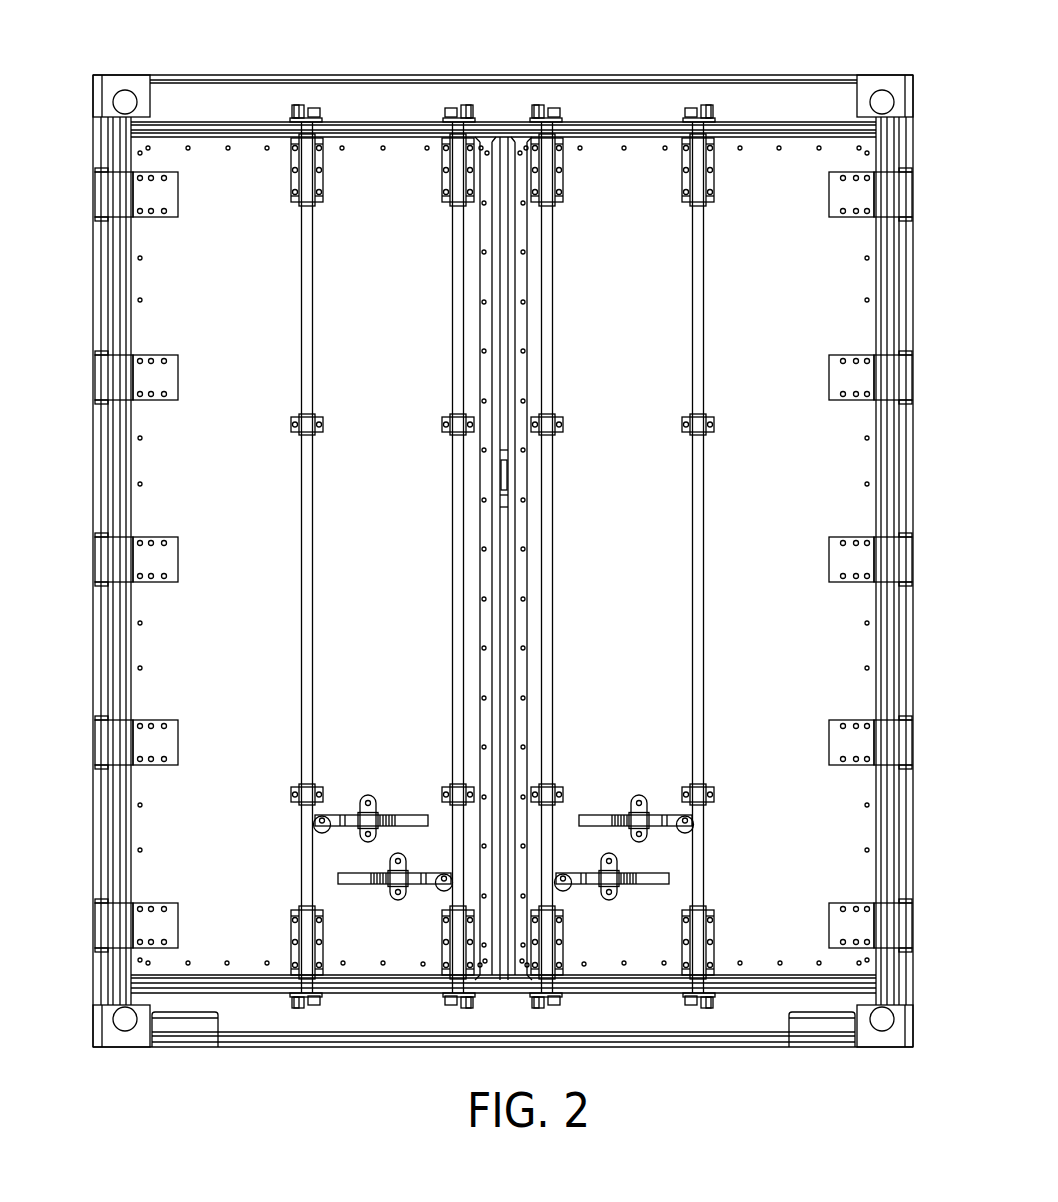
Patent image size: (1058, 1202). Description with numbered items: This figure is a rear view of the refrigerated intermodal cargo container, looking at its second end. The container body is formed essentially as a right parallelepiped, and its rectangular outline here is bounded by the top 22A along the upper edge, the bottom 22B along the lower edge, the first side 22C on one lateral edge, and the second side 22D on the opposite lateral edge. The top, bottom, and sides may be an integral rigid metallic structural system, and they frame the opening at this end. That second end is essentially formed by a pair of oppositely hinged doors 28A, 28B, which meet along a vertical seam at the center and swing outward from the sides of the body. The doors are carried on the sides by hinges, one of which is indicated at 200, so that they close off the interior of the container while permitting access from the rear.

The top 22A is at (661, 56).
The bottom 22B is at (678, 1067).
The first side 22C is at (82, 654).
The second side 22D is at (924, 497).
The door 28A is at (770, 940).
The door 28B is at (248, 942).
The hinge assembly 200 is at (858, 927).